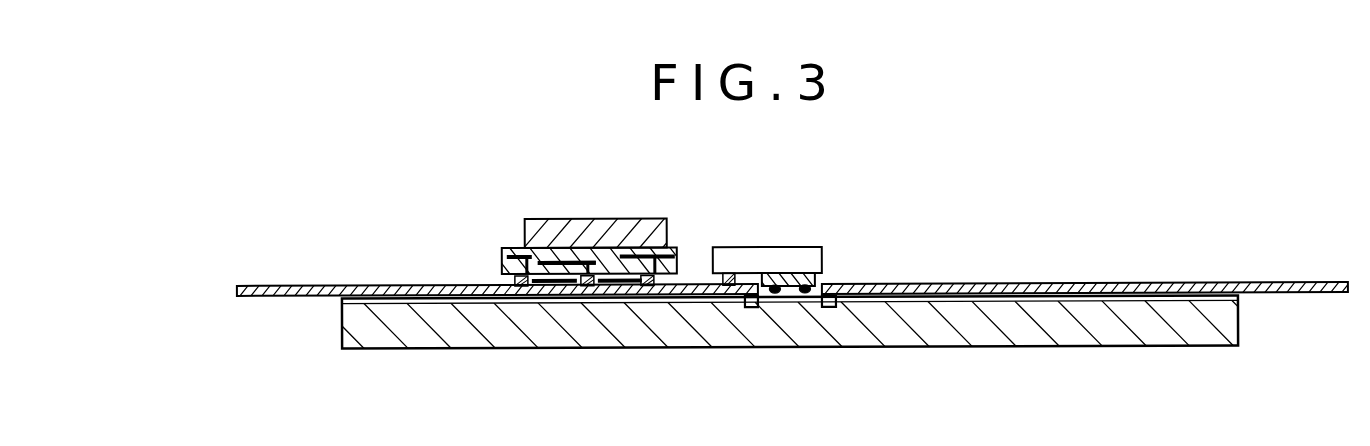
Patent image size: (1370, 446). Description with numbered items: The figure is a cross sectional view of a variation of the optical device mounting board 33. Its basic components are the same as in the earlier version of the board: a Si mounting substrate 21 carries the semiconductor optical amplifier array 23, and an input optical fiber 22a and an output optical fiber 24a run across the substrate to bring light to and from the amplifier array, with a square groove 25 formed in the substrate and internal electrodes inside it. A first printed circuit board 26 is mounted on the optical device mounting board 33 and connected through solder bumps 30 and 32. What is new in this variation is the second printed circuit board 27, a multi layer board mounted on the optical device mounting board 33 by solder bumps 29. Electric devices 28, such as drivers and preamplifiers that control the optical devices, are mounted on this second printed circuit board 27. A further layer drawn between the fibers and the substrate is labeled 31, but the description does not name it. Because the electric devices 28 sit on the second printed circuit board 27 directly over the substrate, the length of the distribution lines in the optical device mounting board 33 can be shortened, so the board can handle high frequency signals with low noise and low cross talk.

The Si mounting substrate 21 is at (1168, 330).
The input optical fiber 22a is at (272, 284).
The semiconductor optical amplifier array 23 is at (803, 292).
The output optical fiber 24a is at (1292, 282).
The square groove 25 is at (745, 302).
The first printed circuit board 26 is at (808, 256).
The second printed circuit board 27 is at (502, 247).
The electric devices 28 is at (556, 225).
The solder bump 29 is at (602, 262).
The solder bump 30 is at (728, 275).
The adhesive layer 31 is at (520, 300).
The solder bump 32 is at (770, 290).
The optical device mounting board 33 is at (1082, 216).